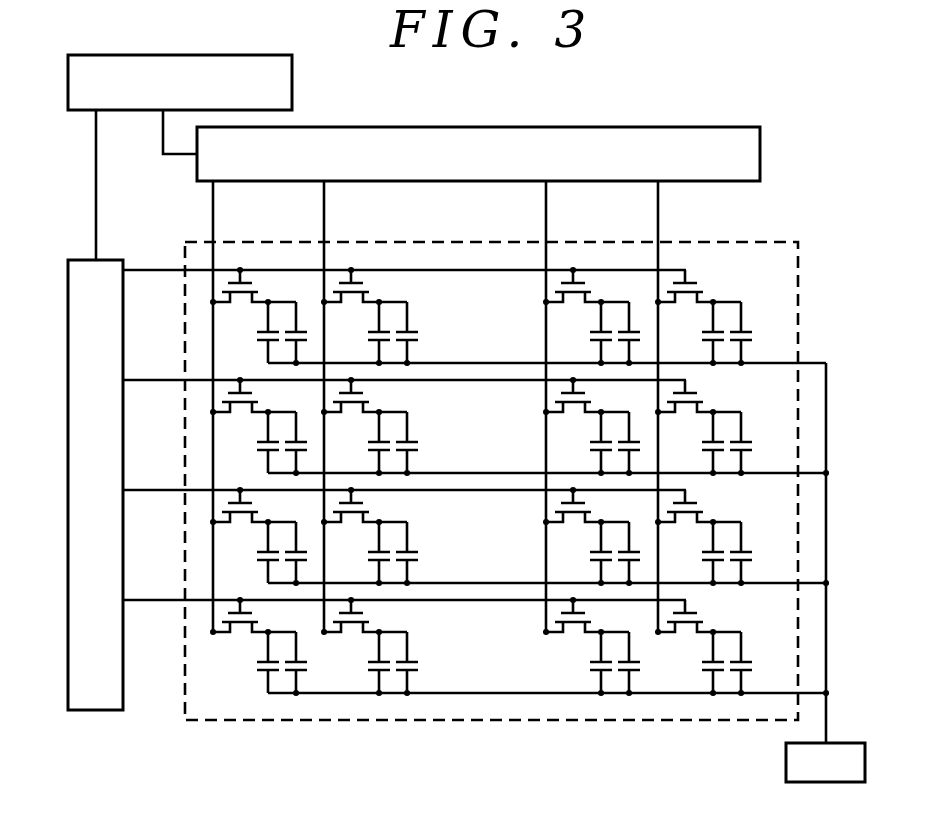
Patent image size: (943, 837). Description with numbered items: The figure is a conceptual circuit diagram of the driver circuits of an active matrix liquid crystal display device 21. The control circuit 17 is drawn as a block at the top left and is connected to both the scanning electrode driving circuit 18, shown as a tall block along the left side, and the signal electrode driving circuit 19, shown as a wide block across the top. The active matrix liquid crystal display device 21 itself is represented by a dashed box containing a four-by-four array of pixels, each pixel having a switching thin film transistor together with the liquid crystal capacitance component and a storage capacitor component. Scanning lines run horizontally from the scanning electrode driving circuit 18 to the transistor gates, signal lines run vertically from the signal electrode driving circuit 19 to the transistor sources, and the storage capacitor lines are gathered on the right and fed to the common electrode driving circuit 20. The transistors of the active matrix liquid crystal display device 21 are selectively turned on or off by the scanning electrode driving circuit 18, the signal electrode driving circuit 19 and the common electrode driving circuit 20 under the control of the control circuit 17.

The control circuit 17 is at (180, 157).
The scanning electrode driving circuit 18 is at (377, 485).
The signal electrode driving circuit 19 is at (478, 379).
The common electrode driving circuit 20 is at (566, 572).
The active matrix liquid crystal display device 21 is at (552, 722).